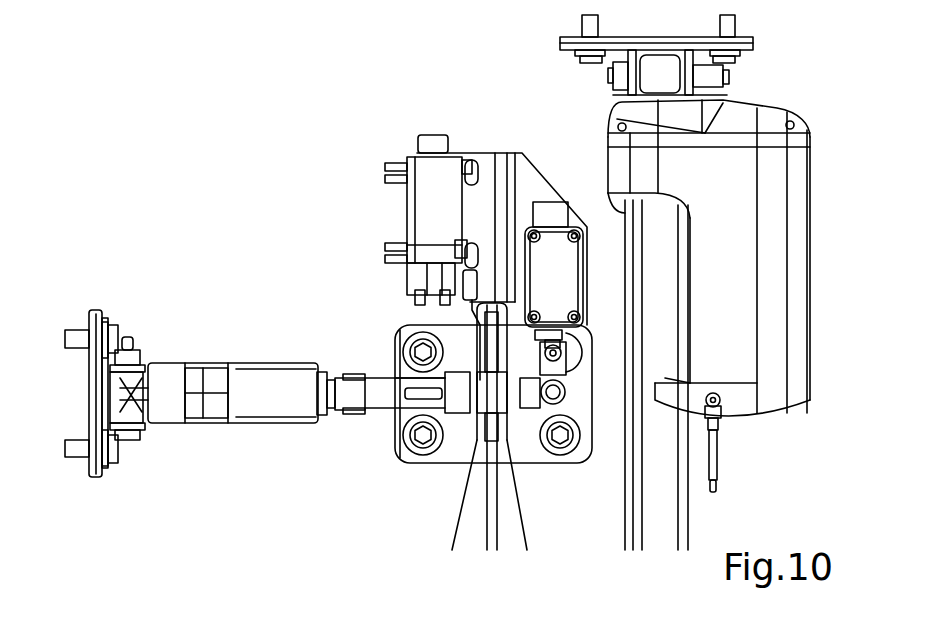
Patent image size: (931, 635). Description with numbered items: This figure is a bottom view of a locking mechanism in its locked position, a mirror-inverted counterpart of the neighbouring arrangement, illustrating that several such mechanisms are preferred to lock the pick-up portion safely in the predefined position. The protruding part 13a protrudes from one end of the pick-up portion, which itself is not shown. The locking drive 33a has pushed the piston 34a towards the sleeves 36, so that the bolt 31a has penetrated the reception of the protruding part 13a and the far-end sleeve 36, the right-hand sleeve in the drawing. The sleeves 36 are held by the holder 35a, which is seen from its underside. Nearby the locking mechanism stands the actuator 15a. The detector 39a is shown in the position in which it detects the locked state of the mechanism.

The protruding part 13a is at (525, 510).
The actuator 15a is at (810, 323).
The bolt 31a is at (492, 393).
The locking drive 33a is at (253, 425).
The piston 34a is at (375, 413).
The holder 35a is at (397, 336).
The sleeves 36 is at (530, 407).
The detector 39a is at (540, 265).